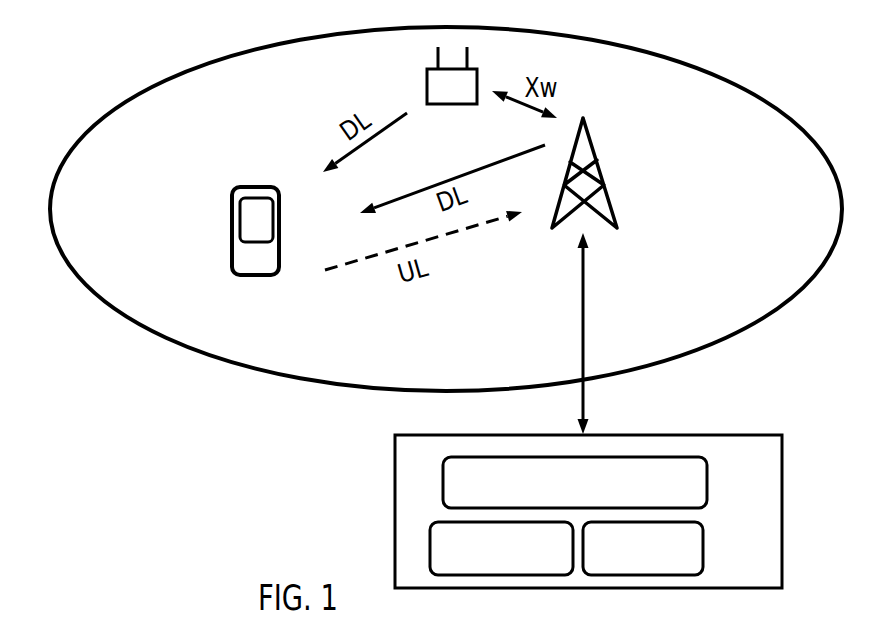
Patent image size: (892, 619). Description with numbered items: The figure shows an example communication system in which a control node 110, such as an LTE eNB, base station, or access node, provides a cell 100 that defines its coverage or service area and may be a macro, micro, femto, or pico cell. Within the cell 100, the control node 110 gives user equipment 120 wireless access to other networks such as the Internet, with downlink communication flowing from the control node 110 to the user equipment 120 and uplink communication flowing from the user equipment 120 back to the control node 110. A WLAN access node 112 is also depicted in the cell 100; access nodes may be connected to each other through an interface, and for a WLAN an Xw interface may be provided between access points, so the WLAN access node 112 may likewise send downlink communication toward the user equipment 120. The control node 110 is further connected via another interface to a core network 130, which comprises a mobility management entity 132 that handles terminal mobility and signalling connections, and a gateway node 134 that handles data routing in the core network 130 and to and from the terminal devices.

The cell 100 is at (187, 70).
The control node 110 is at (591, 130).
The WLAN access node 112 is at (427, 87).
The user equipment 120 is at (236, 186).
The core network 130 is at (588, 511).
The mobility management entity 132 is at (501, 548).
The gateway node 134 is at (643, 548).